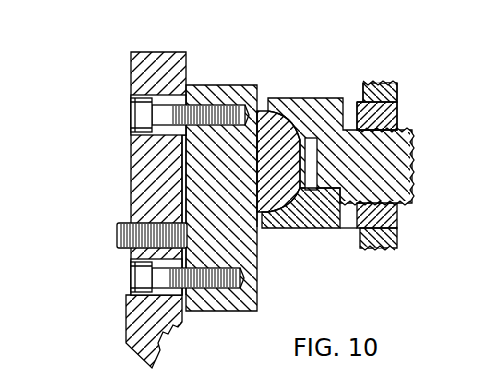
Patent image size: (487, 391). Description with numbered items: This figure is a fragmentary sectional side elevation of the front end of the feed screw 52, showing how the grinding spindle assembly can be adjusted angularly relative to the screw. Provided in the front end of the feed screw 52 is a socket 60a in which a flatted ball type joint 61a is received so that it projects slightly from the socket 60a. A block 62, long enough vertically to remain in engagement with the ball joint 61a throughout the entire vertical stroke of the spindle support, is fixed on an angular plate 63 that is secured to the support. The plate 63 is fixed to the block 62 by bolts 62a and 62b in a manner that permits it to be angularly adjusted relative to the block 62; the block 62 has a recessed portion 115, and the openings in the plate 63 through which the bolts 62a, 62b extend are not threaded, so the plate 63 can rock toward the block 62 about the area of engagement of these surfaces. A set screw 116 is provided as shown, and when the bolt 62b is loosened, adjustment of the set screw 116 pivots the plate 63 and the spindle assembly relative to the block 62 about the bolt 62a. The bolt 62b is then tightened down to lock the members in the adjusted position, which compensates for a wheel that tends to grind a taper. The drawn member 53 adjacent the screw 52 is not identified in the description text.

The feed screw 52 is at (406, 180).
The ring member 53 is at (398, 207).
The socket 60a is at (307, 138).
The flatted ball type joint 61a is at (285, 197).
The block 62 is at (257, 255).
The bolt 62a is at (210, 112).
The bolt 62b is at (217, 296).
The angular plate 63 is at (147, 84).
The recessed portion 115 is at (183, 187).
The set screw 116 is at (138, 223).